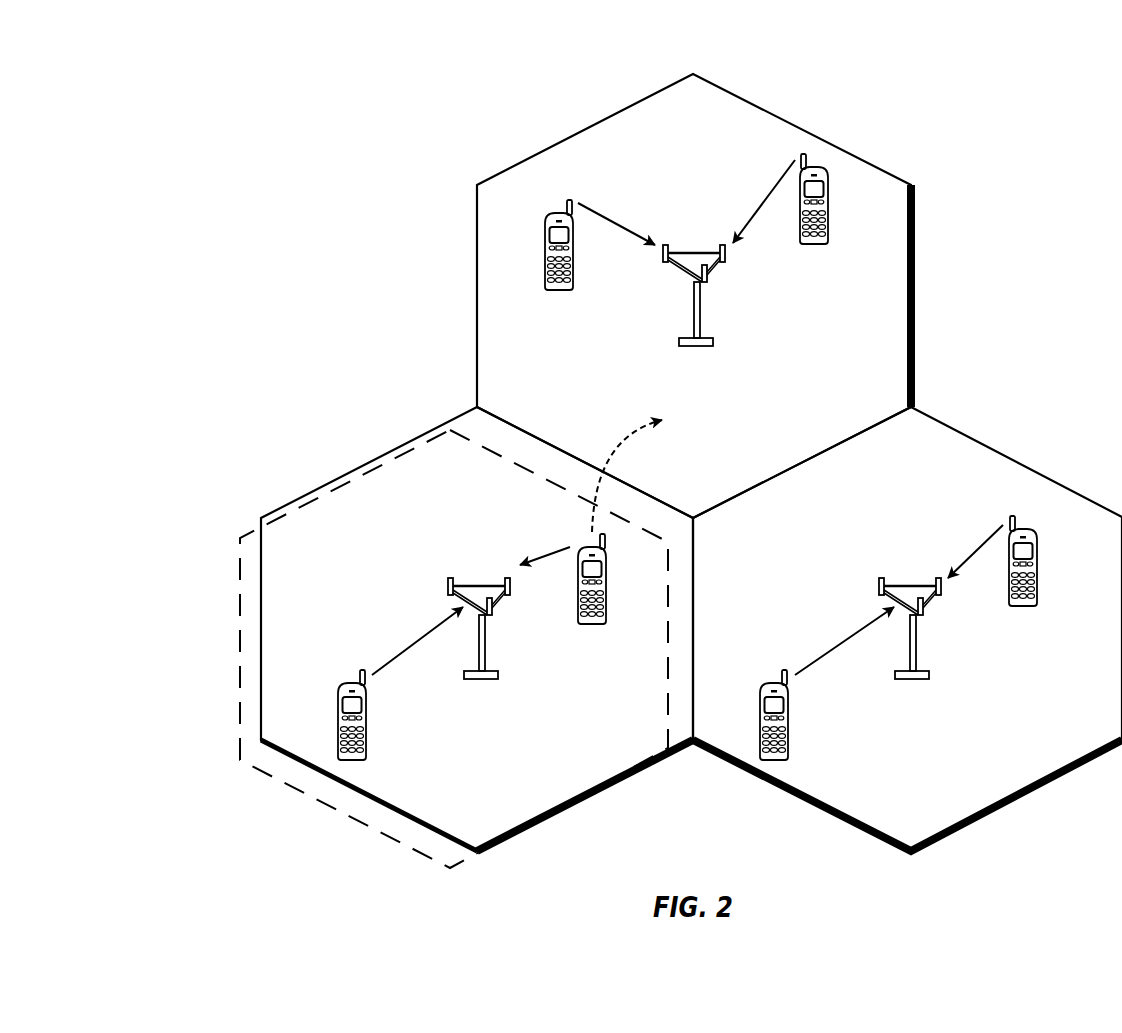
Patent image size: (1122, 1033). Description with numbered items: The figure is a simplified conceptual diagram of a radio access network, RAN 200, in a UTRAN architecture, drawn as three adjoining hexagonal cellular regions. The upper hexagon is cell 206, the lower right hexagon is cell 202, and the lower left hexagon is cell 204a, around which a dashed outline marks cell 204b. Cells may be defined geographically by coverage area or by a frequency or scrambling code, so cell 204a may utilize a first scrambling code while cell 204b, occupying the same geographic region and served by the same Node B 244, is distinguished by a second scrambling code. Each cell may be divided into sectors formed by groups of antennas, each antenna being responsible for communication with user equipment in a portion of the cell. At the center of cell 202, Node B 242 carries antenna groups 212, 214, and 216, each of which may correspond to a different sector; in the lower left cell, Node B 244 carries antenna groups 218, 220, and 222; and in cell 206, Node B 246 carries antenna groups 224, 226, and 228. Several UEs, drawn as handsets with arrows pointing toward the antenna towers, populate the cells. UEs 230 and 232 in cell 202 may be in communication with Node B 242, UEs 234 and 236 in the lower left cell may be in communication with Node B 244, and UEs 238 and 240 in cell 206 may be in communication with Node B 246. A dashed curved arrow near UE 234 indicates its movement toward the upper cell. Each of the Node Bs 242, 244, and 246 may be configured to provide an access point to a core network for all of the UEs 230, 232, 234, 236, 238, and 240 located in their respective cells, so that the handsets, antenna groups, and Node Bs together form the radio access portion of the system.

The RAN 200 is at (641, 456).
The cell 202 is at (1014, 461).
The cell 204a is at (348, 473).
The cell 204b is at (240, 552).
The cell 206 is at (785, 121).
The antenna group 212 is at (880, 581).
The antenna group 214 is at (923, 615).
The antenna group 216 is at (940, 595).
The antenna group 218 is at (492, 615).
The antenna group 220 is at (509, 595).
The antenna group 222 is at (449, 581).
The antenna group 224 is at (664, 263).
The antenna group 226 is at (707, 282).
The antenna group 228 is at (725, 262).
The UE 230 is at (1040, 557).
The UE 232 is at (760, 707).
The UE 234 is at (608, 570).
The UE 236 is at (338, 706).
The UE 238 is at (556, 293).
The UE 240 is at (818, 244).
The Node B 242 is at (913, 578).
The Node B 244 is at (482, 578).
The Node B 246 is at (697, 244).